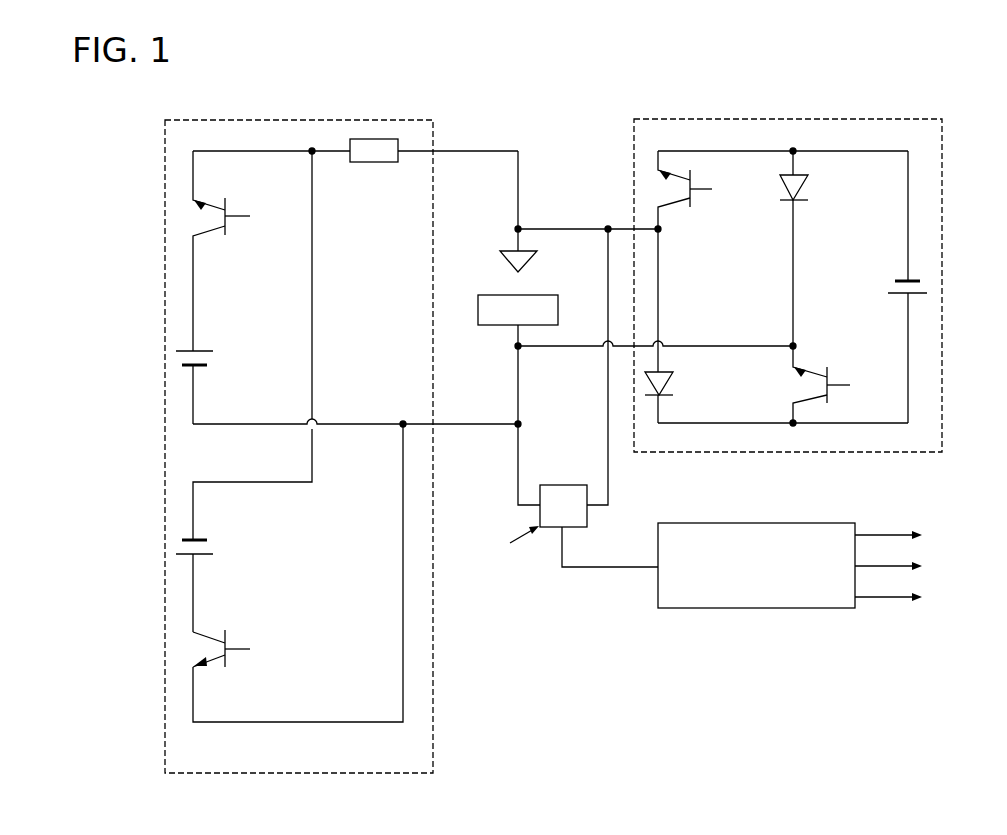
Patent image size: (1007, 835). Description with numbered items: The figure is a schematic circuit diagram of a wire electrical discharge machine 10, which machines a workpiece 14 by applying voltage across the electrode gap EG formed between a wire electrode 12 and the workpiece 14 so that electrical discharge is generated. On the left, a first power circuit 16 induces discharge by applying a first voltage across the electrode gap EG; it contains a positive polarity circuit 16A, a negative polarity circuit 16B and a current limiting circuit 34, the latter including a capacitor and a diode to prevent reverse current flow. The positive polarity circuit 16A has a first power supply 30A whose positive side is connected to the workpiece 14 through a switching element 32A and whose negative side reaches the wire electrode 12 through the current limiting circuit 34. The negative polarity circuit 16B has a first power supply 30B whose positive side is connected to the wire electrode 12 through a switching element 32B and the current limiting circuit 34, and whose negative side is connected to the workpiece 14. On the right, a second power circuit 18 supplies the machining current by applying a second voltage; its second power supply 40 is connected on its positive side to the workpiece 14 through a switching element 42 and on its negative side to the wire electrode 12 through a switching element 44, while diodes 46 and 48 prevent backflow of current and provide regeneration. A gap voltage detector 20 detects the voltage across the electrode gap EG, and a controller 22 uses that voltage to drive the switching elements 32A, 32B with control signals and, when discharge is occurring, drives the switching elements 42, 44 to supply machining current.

The wire electrical discharge machine 10 is at (545, 124).
The wire electrode 12 is at (509, 244).
The workpiece 14 is at (486, 327).
The first power circuit 16 is at (165, 132).
The positive polarity circuit 16A is at (218, 725).
The negative polarity circuit 16B is at (218, 427).
The second power circuit 18 is at (943, 140).
The gap voltage detector 20 is at (555, 484).
The controller 22 is at (712, 523).
The first power supply 30A is at (205, 557).
The first power supply 30B is at (205, 350).
The switching element 32A is at (235, 657).
The switching element 32B is at (237, 213).
The current limiting circuit 34 is at (366, 162).
The second power supply 40 is at (900, 280).
The switching element 42 is at (836, 368).
The switching element 44 is at (706, 210).
The diode 46 is at (808, 186).
The diode 48 is at (669, 384).
The electrode gap EG is at (546, 281).